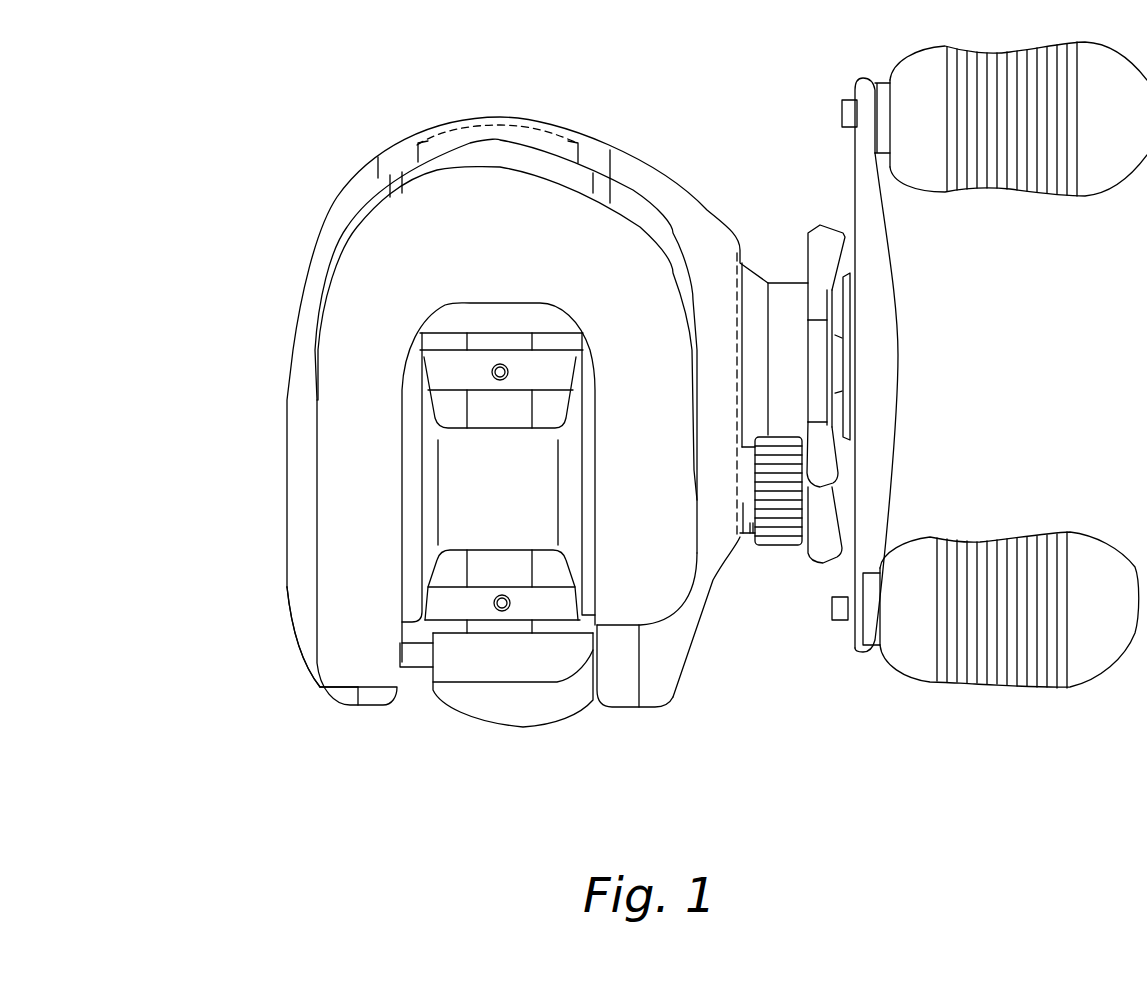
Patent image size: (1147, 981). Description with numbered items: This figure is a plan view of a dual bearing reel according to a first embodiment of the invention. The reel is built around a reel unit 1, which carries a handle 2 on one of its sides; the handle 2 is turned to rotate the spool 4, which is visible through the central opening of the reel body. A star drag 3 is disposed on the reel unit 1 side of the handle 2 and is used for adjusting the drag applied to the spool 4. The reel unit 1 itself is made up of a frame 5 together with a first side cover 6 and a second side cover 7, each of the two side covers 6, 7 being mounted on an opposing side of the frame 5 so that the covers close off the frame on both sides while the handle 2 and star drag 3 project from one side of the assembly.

The reel unit 1 is at (347, 128).
The handle 2 is at (904, 343).
The star drag 3 is at (818, 232).
The spool 4 is at (460, 460).
The frame 5 is at (374, 716).
The first side cover 6 is at (318, 687).
The second side cover 7 is at (660, 675).